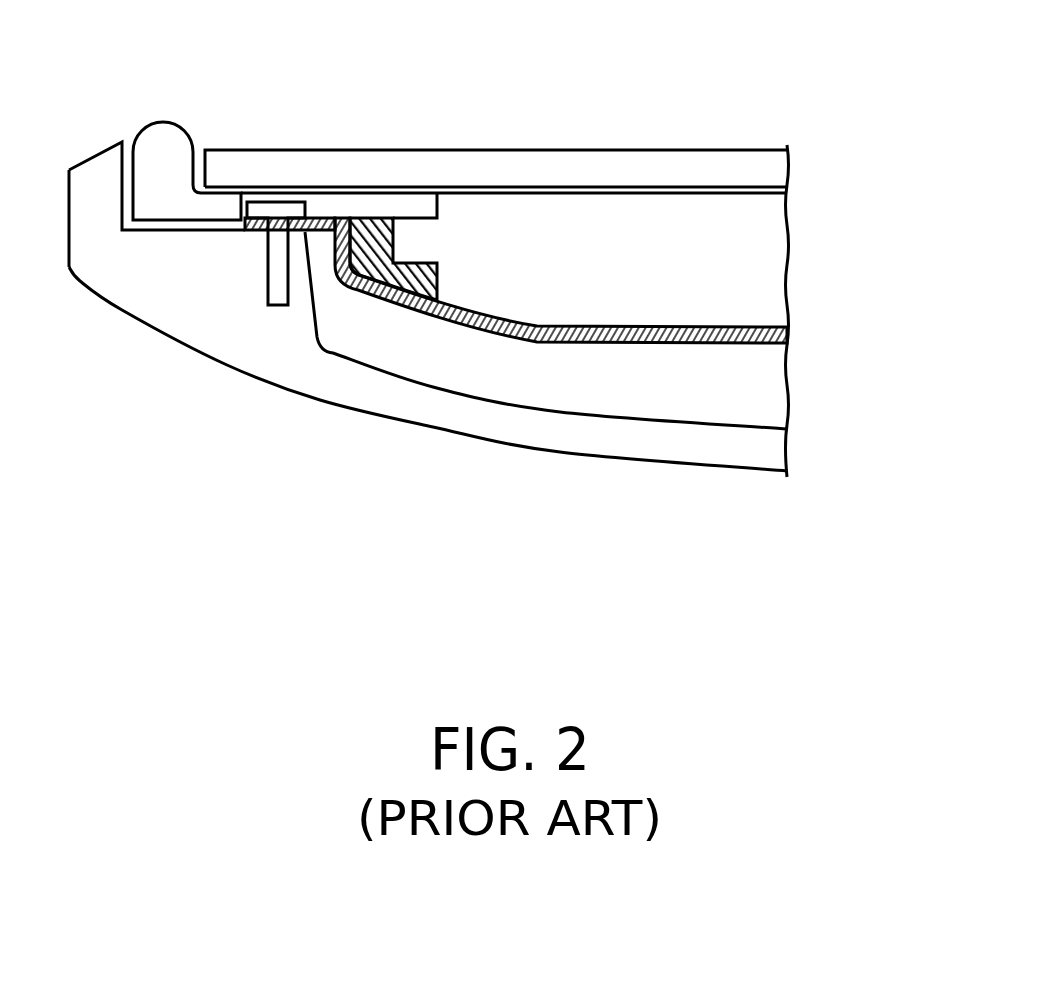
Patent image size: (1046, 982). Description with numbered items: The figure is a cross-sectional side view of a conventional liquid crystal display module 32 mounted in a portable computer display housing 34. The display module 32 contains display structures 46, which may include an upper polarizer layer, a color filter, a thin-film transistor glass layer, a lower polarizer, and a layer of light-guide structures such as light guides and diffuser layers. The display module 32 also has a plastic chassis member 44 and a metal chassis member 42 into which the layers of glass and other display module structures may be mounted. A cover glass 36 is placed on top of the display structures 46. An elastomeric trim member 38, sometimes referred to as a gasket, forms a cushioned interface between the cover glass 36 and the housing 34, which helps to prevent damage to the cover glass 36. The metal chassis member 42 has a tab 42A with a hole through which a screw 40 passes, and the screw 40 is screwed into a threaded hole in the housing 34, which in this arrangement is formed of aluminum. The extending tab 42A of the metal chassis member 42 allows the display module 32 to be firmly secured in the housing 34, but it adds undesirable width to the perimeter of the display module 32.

The display module 32 is at (868, 178).
The housing 34 is at (687, 448).
The cover glass 36 is at (568, 168).
The elastomeric trim member 38 is at (162, 142).
The screw 40 is at (273, 275).
The metal chassis member 42 is at (422, 305).
The tab 42A is at (253, 235).
The plastic chassis member 44 is at (375, 218).
The display structures 46 is at (768, 230).